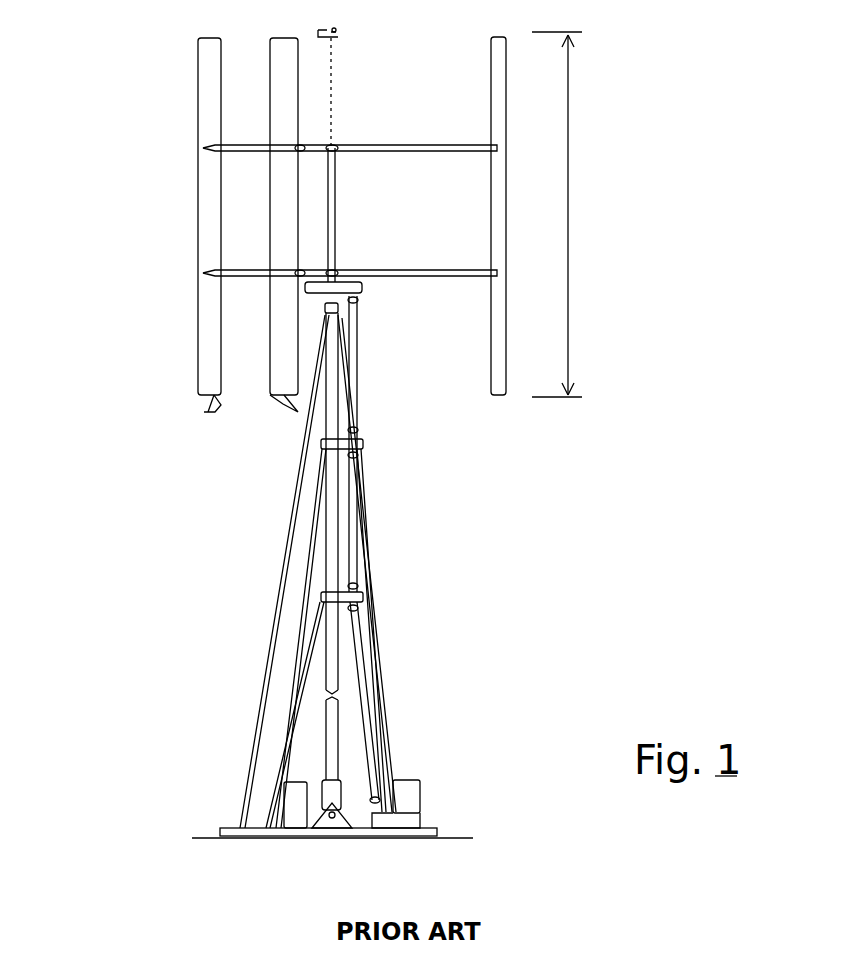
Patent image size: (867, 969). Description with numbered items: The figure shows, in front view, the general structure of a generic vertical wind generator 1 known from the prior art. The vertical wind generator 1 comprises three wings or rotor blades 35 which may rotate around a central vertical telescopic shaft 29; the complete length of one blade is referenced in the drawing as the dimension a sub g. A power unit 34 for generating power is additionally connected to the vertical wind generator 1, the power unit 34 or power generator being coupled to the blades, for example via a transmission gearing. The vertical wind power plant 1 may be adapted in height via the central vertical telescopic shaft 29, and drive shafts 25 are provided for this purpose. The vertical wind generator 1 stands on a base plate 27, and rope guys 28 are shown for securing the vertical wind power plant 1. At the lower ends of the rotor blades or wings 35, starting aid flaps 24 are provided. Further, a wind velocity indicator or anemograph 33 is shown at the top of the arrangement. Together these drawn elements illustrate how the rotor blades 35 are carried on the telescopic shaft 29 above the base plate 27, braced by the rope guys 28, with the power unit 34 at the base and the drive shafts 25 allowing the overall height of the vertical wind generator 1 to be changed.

The vertical wind generator 1 is at (610, 84).
The starting aid flaps 24 is at (275, 412).
The drive shafts 25 is at (358, 377).
The base plate 27 is at (430, 832).
The rope guys 28 is at (267, 607).
The central vertical telescopic shaft 29 is at (337, 645).
The wind velocity indicator 33 is at (347, 36).
The power unit 34 is at (408, 790).
The rotor blades 35 is at (283, 160).